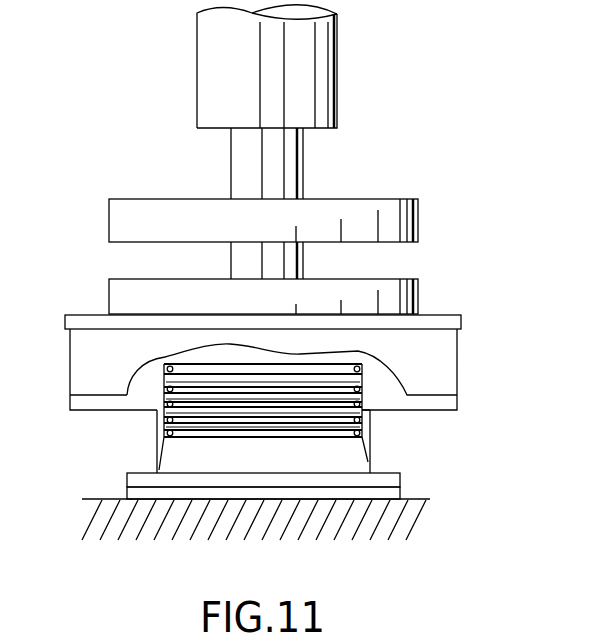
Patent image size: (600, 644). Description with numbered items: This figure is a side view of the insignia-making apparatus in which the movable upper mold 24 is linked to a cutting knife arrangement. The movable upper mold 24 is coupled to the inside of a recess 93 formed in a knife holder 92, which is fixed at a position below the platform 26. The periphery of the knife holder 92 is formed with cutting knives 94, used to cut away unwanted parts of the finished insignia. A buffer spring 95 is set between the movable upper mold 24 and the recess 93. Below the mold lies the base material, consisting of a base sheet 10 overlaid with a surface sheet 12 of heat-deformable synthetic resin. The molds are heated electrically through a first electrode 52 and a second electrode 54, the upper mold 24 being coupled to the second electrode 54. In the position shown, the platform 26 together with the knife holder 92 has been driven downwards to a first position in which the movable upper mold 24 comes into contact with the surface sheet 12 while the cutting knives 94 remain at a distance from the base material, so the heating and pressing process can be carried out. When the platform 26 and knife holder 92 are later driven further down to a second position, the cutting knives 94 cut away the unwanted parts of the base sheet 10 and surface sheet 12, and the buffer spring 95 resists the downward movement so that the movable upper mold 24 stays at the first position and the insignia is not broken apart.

The base sheet 10 is at (400, 495).
The surface sheet 12 is at (400, 476).
The movable upper mold 24 is at (350, 458).
The platform 26 is at (458, 368).
The first electrode 52 is at (103, 499).
The second electrode 54 is at (414, 297).
The knife holder 92 is at (137, 405).
The recess 93 is at (363, 375).
The cutting knives 94 is at (157, 456).
The buffer spring 95 is at (368, 410).